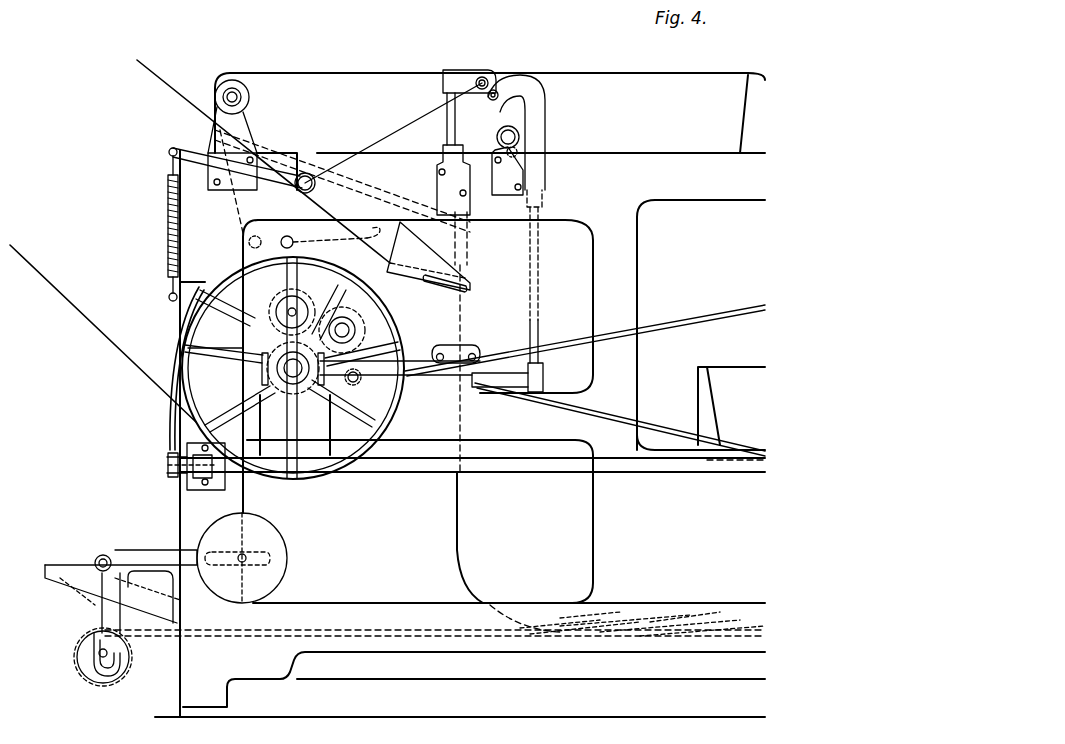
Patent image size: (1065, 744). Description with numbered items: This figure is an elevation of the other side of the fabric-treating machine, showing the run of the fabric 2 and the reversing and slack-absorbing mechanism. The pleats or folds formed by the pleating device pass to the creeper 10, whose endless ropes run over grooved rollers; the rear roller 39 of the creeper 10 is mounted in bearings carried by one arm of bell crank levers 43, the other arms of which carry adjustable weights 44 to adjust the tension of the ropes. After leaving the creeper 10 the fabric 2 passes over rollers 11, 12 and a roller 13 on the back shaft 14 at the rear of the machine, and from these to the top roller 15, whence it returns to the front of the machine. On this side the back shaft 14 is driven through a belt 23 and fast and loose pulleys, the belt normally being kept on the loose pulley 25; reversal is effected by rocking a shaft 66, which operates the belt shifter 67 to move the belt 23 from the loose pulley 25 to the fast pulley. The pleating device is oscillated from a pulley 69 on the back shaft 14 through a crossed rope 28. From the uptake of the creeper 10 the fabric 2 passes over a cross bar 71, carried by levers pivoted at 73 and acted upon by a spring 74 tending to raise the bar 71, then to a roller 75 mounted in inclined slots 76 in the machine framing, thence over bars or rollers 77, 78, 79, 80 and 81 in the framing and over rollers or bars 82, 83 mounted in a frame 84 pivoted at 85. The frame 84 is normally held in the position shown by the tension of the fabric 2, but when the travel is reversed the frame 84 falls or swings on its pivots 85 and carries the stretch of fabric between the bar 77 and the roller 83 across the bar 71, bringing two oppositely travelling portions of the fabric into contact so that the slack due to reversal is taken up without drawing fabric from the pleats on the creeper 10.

The fabric 2 is at (340, 73).
The creeper 10 is at (300, 630).
The roller 11 is at (352, 333).
The roller 12 is at (275, 310).
The roller 13 is at (240, 354).
The back shaft 14 is at (289, 367).
The top roller 15 is at (250, 97).
The belt 23 is at (170, 97).
The loose pulley 25 is at (198, 405).
The crossed rope 28 is at (667, 327).
The rear roller of the creeper 39 is at (130, 656).
The bell crank levers 43 is at (165, 575).
The adjustable weights 44 is at (287, 560).
The shaft 66 is at (366, 472).
The belt shifter 67 is at (170, 340).
The pulley 69 is at (312, 390).
The cross bar 71 is at (465, 215).
The pivot 73 is at (305, 173).
The spring 74 is at (167, 215).
The roller 75 is at (445, 277).
The inclined slots 76 is at (468, 286).
The bar or roller 77 is at (292, 238).
The bar or roller 78 is at (372, 230).
The bar or roller 79 is at (516, 134).
The bar or roller 80 is at (480, 78).
The bar or roller 81 is at (255, 236).
The roller or bar 82 is at (508, 150).
The roller or bar 83 is at (490, 99).
The frame 84 is at (540, 212).
The pivot 85 is at (402, 395).